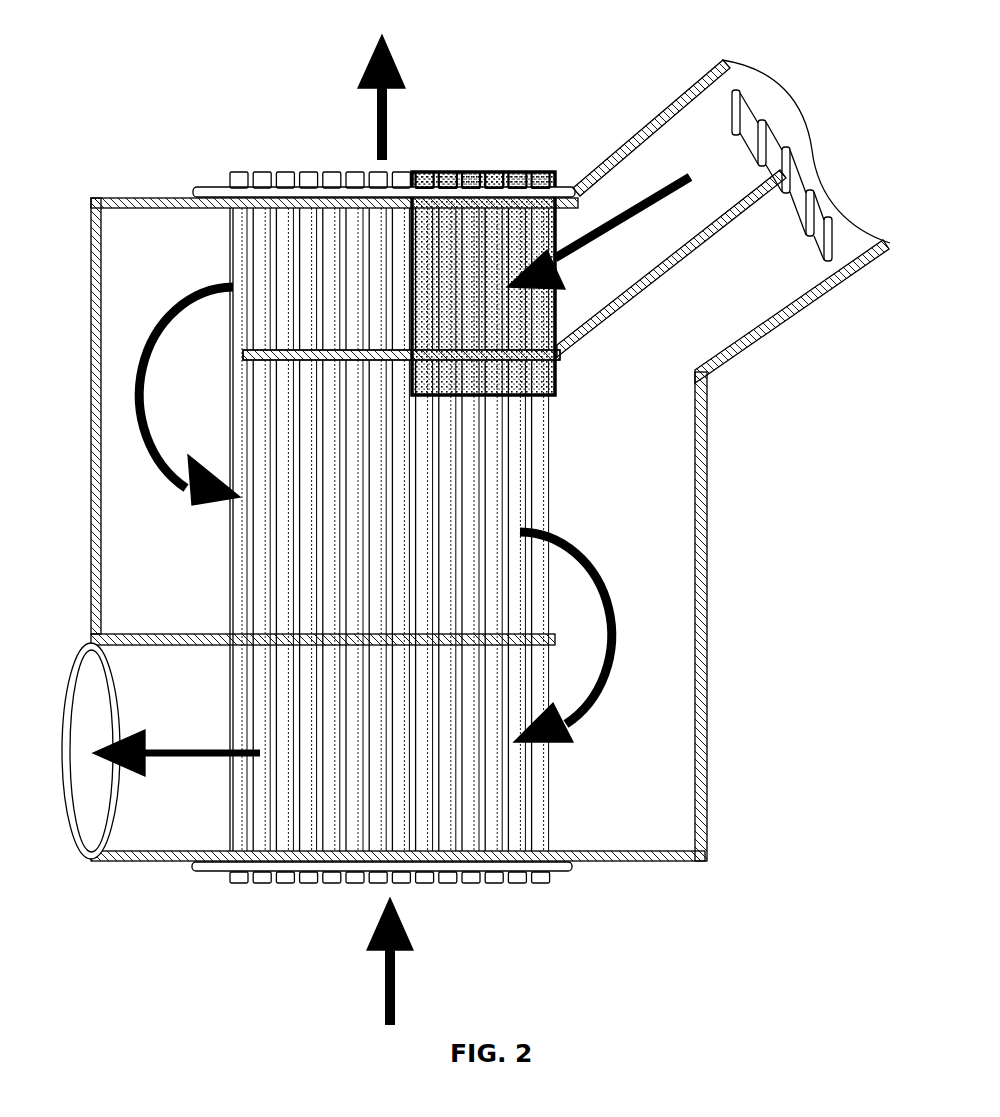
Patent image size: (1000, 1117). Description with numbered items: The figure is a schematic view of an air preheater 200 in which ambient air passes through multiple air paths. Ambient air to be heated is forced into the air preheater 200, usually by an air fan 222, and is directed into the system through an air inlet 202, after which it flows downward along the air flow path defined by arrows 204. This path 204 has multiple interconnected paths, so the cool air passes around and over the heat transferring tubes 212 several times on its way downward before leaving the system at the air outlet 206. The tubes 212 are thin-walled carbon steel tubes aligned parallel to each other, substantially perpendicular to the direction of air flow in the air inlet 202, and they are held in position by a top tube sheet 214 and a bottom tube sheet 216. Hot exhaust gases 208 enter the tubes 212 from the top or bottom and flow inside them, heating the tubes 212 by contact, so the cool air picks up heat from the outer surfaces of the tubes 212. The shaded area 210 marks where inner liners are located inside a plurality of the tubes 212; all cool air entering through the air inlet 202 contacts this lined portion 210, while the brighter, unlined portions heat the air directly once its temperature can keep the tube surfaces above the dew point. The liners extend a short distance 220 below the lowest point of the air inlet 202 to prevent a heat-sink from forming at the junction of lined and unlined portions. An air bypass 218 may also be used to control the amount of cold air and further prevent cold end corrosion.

The air preheater 200 is at (684, 60).
The air inlet 202 is at (560, 313).
The air flow path 204 is at (643, 220).
The air outlet 206 is at (85, 740).
The hot exhaust gases 208 is at (377, 120).
The shaded area 210 is at (497, 270).
The heat transferring tubes 212 is at (252, 220).
The top tube sheet 214 is at (182, 190).
The bottom tube sheet 216 is at (573, 867).
The air bypass 218 is at (668, 364).
The distance 220 is at (560, 376).
The air fan 222 is at (812, 176).